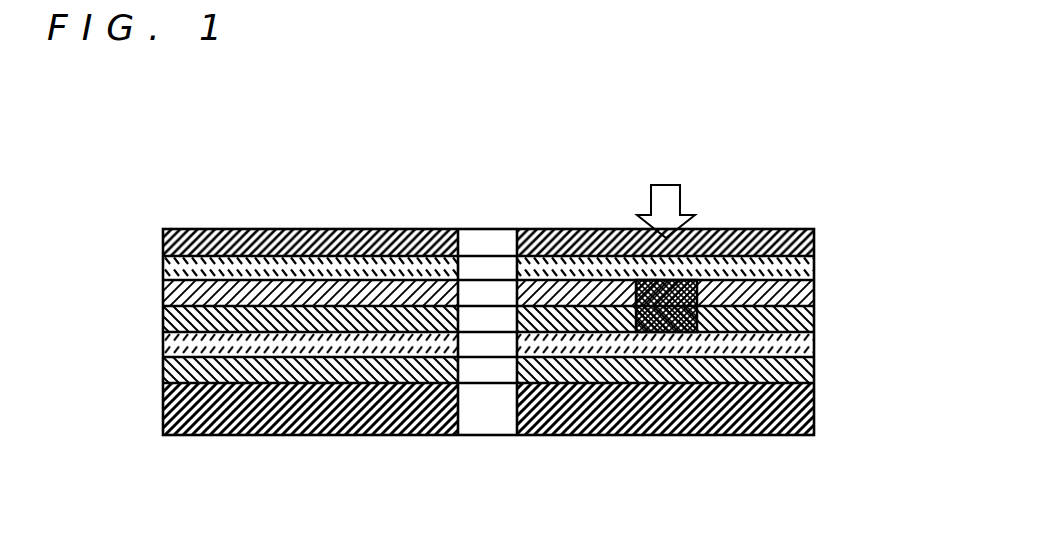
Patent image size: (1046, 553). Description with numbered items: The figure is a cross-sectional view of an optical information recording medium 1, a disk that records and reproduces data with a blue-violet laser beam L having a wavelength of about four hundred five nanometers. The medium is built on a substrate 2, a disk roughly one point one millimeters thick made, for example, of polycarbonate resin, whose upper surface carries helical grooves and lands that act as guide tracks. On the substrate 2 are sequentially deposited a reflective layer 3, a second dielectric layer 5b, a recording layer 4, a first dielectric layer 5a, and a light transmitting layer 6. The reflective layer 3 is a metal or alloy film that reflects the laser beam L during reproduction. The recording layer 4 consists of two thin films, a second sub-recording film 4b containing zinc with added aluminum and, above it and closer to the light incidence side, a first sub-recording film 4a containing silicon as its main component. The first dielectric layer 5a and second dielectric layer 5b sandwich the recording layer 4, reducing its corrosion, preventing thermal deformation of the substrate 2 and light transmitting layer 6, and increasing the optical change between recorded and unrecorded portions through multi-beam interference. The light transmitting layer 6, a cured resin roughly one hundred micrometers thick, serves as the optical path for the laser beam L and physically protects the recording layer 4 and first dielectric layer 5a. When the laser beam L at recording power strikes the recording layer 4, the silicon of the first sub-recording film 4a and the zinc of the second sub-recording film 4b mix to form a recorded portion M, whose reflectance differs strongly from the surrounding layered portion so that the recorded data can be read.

The optical information recording medium 1 is at (497, 160).
The substrate 2 is at (815, 405).
The reflective layer 3 is at (815, 368).
The recording layer 4 is at (546, 308).
The first sub-recording film 4a is at (815, 292).
The second sub-recording film 4b is at (815, 318).
The first dielectric layer 5a is at (815, 266).
The second dielectric layer 5b is at (815, 341).
The light transmitting layer 6 is at (815, 240).
The laser beam L is at (651, 200).
The recorded portion M is at (663, 333).